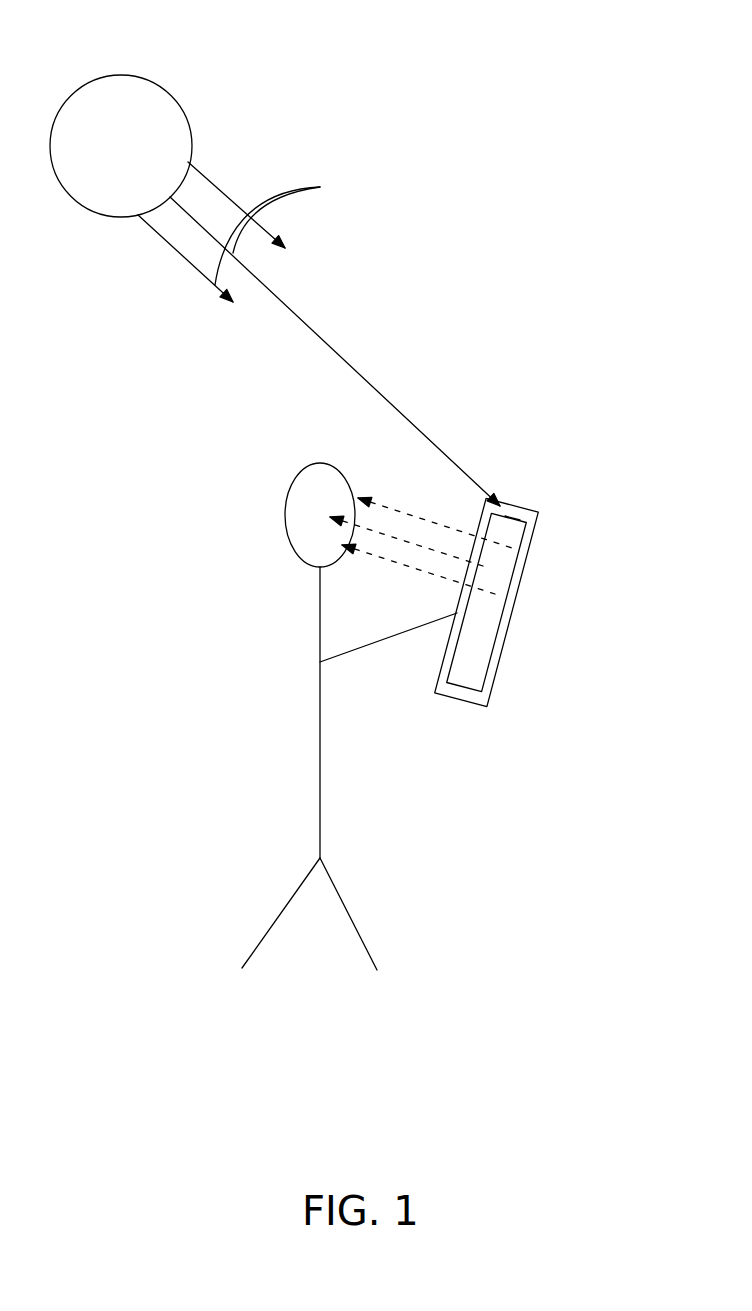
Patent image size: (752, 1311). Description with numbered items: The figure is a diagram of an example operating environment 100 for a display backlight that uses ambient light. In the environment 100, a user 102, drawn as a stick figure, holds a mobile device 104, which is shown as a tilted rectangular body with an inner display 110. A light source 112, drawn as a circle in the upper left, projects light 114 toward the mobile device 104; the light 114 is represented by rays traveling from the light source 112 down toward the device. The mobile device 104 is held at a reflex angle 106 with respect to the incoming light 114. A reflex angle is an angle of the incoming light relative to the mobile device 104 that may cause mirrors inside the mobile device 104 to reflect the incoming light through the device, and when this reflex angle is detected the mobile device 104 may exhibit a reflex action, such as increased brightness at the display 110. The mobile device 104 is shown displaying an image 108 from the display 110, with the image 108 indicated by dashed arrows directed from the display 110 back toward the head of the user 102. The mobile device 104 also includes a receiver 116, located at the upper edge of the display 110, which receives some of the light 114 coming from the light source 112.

The example environment 100 is at (383, 1178).
The user 102 is at (320, 742).
The mobile device 104 is at (501, 653).
The reflex angle 106 is at (435, 523).
The image 108 is at (387, 507).
The display 110 is at (500, 571).
The light source 112 is at (145, 80).
The light 114 is at (255, 232).
The receiver 116 is at (515, 510).